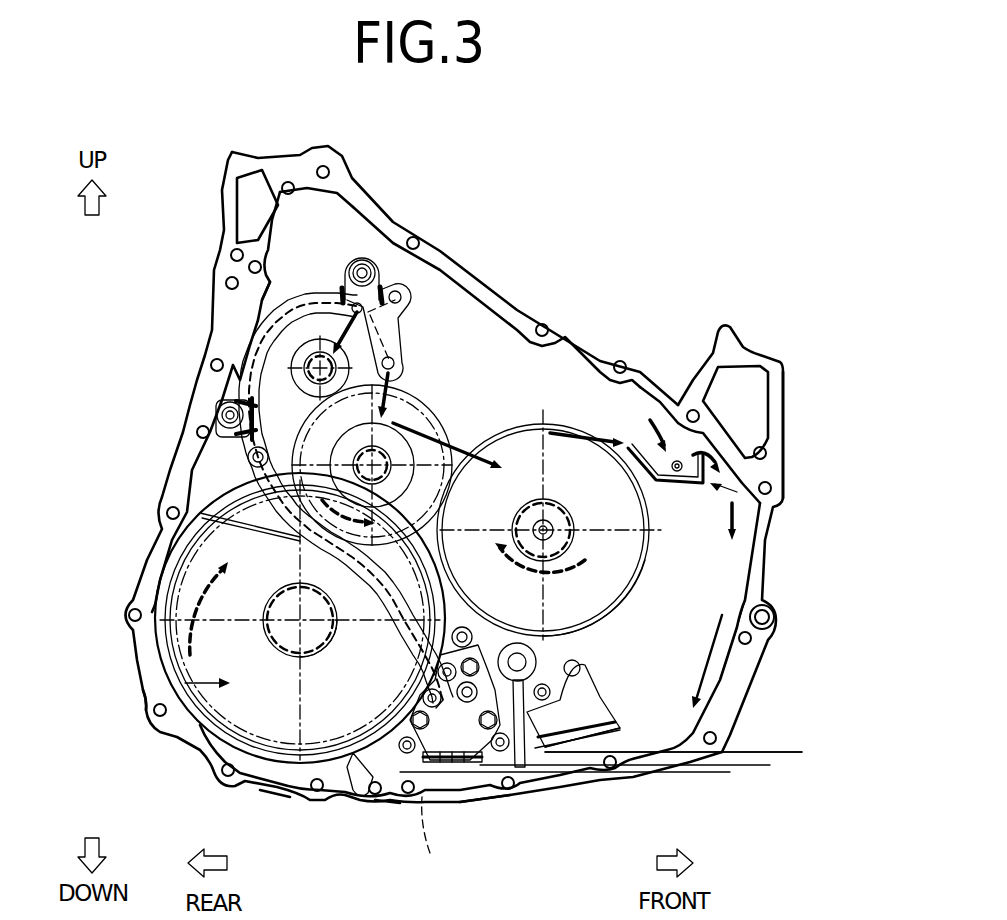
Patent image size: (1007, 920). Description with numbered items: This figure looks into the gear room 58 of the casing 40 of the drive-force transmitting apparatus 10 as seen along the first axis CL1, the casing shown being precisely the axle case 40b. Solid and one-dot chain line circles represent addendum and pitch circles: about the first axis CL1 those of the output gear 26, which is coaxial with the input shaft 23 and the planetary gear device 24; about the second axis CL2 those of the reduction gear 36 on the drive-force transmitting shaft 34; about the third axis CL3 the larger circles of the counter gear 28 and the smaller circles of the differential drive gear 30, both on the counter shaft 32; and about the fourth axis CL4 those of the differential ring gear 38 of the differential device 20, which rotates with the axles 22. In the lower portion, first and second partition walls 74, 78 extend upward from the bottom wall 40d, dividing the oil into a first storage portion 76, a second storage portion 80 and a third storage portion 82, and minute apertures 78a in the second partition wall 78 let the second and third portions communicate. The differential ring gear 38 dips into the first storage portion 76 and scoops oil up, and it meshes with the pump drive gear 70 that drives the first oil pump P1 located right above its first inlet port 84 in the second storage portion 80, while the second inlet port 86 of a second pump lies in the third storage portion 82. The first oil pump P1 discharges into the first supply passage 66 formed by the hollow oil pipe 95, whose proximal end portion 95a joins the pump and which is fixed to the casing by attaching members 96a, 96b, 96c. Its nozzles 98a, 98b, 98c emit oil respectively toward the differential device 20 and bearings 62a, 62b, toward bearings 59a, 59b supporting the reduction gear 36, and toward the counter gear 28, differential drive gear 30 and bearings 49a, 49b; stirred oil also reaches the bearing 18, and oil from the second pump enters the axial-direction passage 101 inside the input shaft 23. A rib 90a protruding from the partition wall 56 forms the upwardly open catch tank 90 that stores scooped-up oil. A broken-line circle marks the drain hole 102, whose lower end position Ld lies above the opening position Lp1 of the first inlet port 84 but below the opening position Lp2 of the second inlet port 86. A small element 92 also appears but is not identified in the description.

The drive-force transmitting apparatus 10 is at (670, 228).
The bearing 18 is at (580, 535).
The differential device 20 is at (165, 687).
The axles 22 is at (312, 643).
The input shaft 23 is at (557, 518).
The planetary gear device 24 is at (572, 603).
The output gear 26 is at (613, 610).
The counter gear 28 is at (437, 401).
The differential drive gear 30 is at (247, 480).
The counter shaft 32 is at (387, 487).
The drive-force transmitting shaft 34 is at (305, 368).
The reduction gear 36 is at (280, 290).
The differential ring gear 38 is at (160, 650).
The casing 40 is at (455, 471).
The axle case 40b is at (386, 199).
The bottom wall 40d is at (473, 793).
The bearing 49a is at (517, 476).
The bearing 49b is at (415, 405).
The partition wall 56 is at (713, 577).
The gear room 58 is at (710, 553).
The bearing 59a is at (153, 387).
The bearing 59b is at (240, 382).
The bearing 62a is at (230, 699).
The bearing 62b is at (287, 653).
The first supply passage 66 is at (165, 598).
The pump drive gear 70 is at (412, 707).
The first partition wall 74 is at (353, 760).
The first storage portion 76 is at (277, 768).
The second partition wall 78 is at (548, 763).
The apertures 78a is at (537, 768).
The second storage portion 80 is at (393, 774).
The third storage portion 82 is at (650, 742).
The first inlet port 84 is at (453, 785).
The second inlet port 86 is at (560, 765).
The catch tank 90 is at (748, 500).
The rib 90a is at (688, 492).
The pin 92 is at (677, 460).
The oil pipe 95 is at (259, 618).
The proximal end portion 95a is at (413, 693).
The attaching member 96a is at (440, 647).
The attaching member 96b is at (208, 398).
The attaching member 96c is at (355, 250).
The nozzle 98a is at (286, 480).
The nozzle 98b is at (322, 318).
The nozzle 98c is at (405, 385).
The axial-direction passage 101 is at (537, 527).
The drain hole 102 is at (432, 838).
The first axis CL1 is at (542, 527).
The second axis CL2 is at (318, 365).
The third axis CL3 is at (366, 460).
The fourth axis CL4 is at (300, 622).
The first oil pump P1 is at (491, 652).
The position of opening of the first inlet port Lp1 is at (687, 773).
The position of opening of the second inlet port Lp2 is at (783, 755).
The position of lower end of the drain hole Ld is at (742, 766).